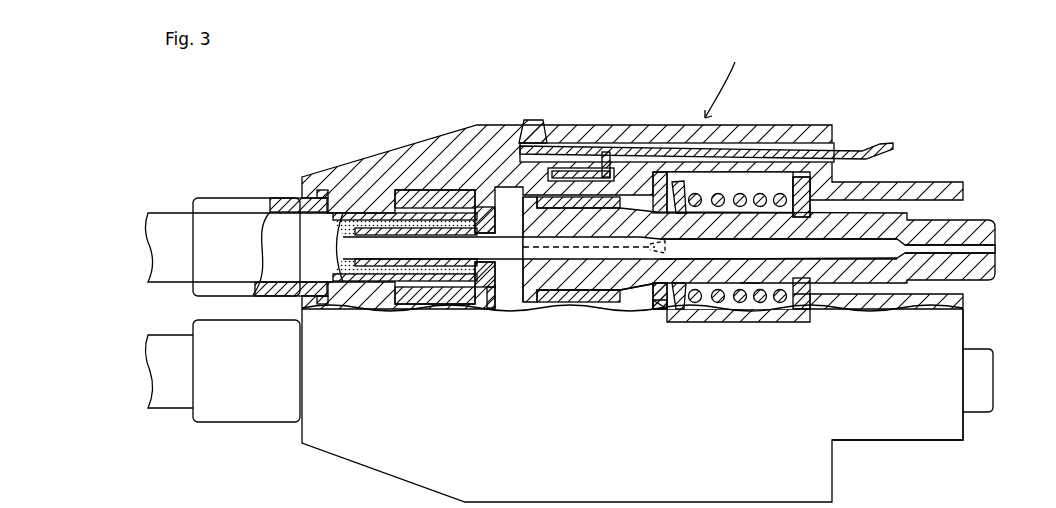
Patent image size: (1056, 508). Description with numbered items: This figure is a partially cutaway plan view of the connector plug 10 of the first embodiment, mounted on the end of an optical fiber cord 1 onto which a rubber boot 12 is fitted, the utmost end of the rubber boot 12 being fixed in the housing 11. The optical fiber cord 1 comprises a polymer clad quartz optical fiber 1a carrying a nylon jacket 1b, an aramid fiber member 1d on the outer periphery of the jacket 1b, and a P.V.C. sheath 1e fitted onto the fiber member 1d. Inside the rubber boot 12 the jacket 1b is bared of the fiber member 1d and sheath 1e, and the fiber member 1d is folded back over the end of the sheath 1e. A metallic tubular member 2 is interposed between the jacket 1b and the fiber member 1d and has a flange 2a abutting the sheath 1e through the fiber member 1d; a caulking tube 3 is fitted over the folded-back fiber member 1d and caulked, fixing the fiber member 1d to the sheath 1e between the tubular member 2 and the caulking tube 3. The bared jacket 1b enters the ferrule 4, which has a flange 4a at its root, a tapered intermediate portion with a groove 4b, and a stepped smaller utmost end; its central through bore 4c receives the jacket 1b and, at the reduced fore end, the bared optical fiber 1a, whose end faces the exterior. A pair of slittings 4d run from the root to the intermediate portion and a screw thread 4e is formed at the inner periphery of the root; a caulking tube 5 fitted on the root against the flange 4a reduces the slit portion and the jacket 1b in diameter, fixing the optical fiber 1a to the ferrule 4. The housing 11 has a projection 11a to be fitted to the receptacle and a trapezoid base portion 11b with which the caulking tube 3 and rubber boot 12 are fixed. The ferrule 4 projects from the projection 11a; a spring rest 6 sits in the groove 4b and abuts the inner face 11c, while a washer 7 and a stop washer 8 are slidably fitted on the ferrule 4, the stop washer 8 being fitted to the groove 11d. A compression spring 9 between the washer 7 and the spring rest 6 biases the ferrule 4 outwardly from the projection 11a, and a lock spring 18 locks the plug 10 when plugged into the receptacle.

The optical fiber cord 1 is at (182, 208).
The polymer clad quartz optical fiber 1a is at (968, 248).
The nylon jacket 1b is at (858, 247).
The aramid fiber member 1d is at (349, 213).
The sheath 1e is at (376, 228).
The metallic tubular member 2 is at (502, 230).
The flange 2a is at (493, 300).
The caulking tube 3 is at (443, 190).
The ferrule 4 is at (908, 217).
The flange 4a is at (521, 308).
The groove 4b is at (796, 183).
The central through bore 4c is at (750, 250).
The slittings 4d is at (568, 310).
The screw thread 4e is at (613, 305).
The caulking tube 5 is at (622, 208).
The spring rest 6 is at (800, 318).
The washer 7 is at (676, 186).
The stop washer 8 is at (660, 318).
The compression spring 9 is at (683, 318).
The connector plug 10 is at (744, 58).
The housing 11 is at (592, 128).
The projection 11a is at (937, 425).
The base portion 11b is at (500, 125).
The inner face 11c is at (803, 177).
The groove 11d is at (661, 172).
The rubber boot 12 is at (297, 198).
The lock spring 18 is at (866, 150).